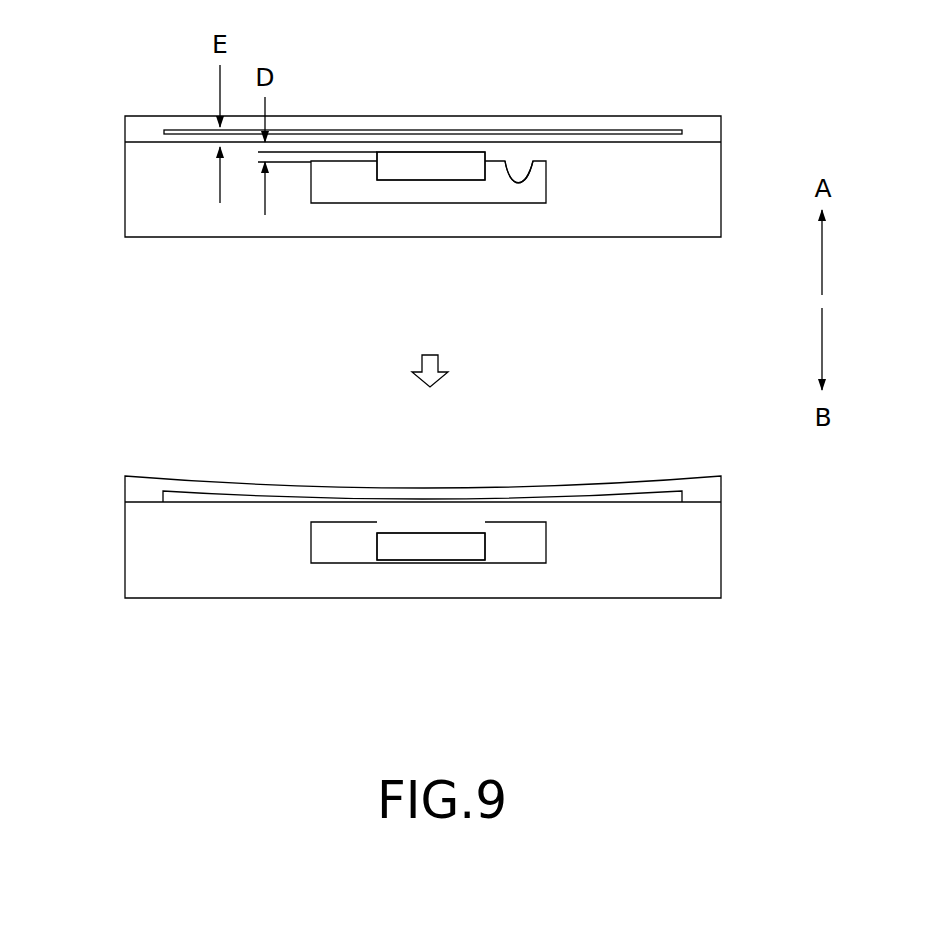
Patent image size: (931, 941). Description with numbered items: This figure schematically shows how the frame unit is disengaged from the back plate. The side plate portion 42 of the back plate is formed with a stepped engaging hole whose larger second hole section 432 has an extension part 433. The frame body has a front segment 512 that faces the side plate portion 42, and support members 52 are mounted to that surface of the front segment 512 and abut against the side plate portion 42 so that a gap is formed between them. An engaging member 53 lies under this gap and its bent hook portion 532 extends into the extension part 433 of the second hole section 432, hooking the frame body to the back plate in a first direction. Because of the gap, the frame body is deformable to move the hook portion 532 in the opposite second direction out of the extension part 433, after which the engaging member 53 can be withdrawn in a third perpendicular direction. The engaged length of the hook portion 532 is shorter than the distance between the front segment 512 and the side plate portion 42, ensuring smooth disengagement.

The side plate portion 42 is at (127, 207).
The second hole section 432 is at (338, 193).
The extension part 433 is at (526, 178).
The support member 52 is at (130, 133).
The front segment 512 is at (628, 116).
The engaging member 53 is at (465, 183).
The hook portion 532 is at (422, 172).